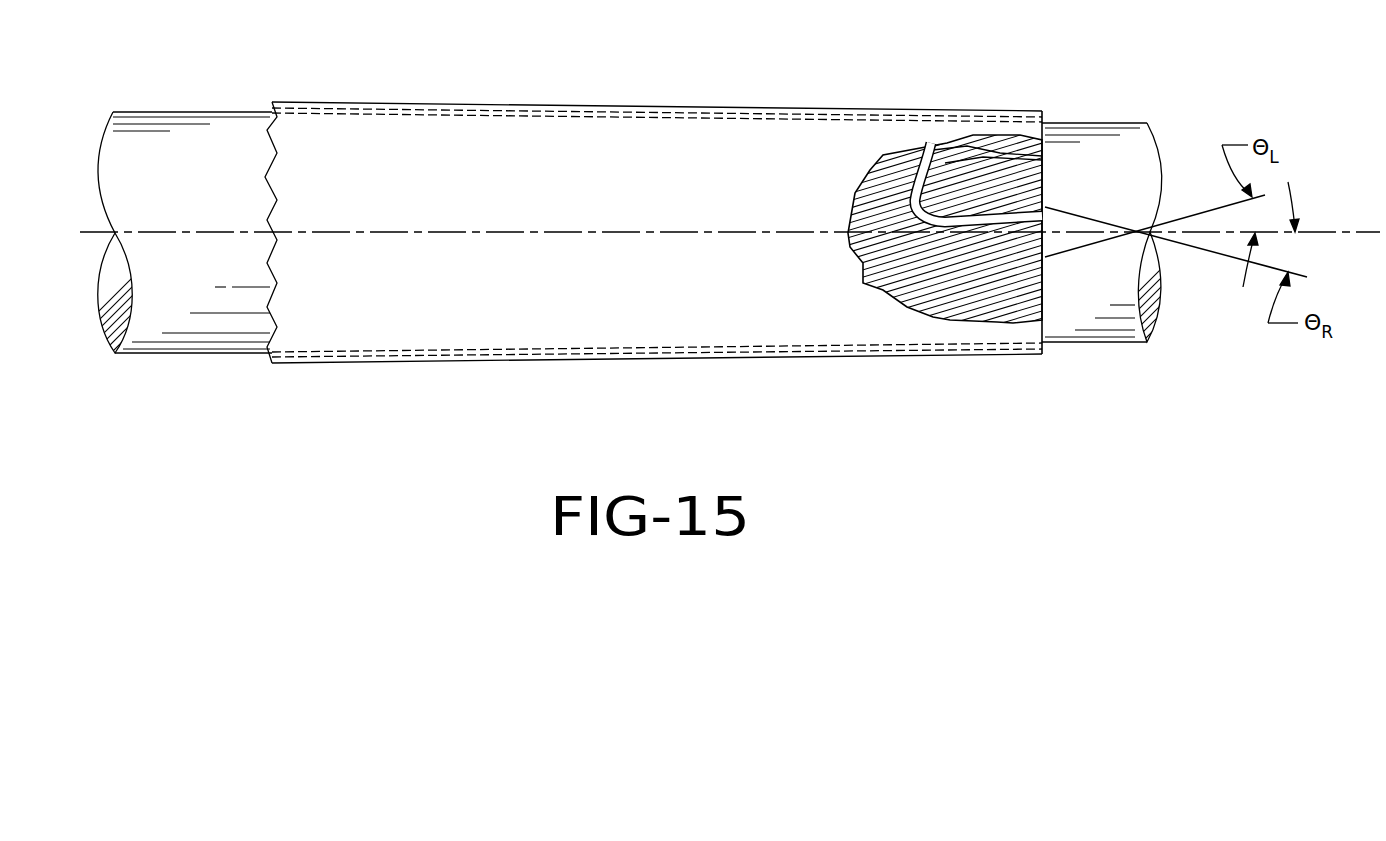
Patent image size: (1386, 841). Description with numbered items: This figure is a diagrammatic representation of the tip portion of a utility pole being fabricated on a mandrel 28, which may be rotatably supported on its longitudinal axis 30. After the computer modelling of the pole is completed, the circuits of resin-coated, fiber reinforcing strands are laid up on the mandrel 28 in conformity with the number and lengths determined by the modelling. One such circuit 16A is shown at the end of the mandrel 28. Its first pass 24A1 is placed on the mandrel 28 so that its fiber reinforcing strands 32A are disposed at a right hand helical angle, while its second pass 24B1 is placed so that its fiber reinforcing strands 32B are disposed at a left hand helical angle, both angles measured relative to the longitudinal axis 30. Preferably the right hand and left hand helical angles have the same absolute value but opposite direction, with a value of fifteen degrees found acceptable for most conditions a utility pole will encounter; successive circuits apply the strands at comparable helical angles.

The mandrel 28 is at (223, 153).
The second pass of the first circuit 24B1 is at (840, 163).
The first pass of the first circuit 24A1 is at (928, 150).
The first circuit 16A is at (1048, 115).
The fiber reinforcing strands of the first pass 32A is at (1000, 195).
The fiber reinforcing strands of the second pass 32B is at (997, 290).
The longitudinal axis 30 is at (1360, 232).